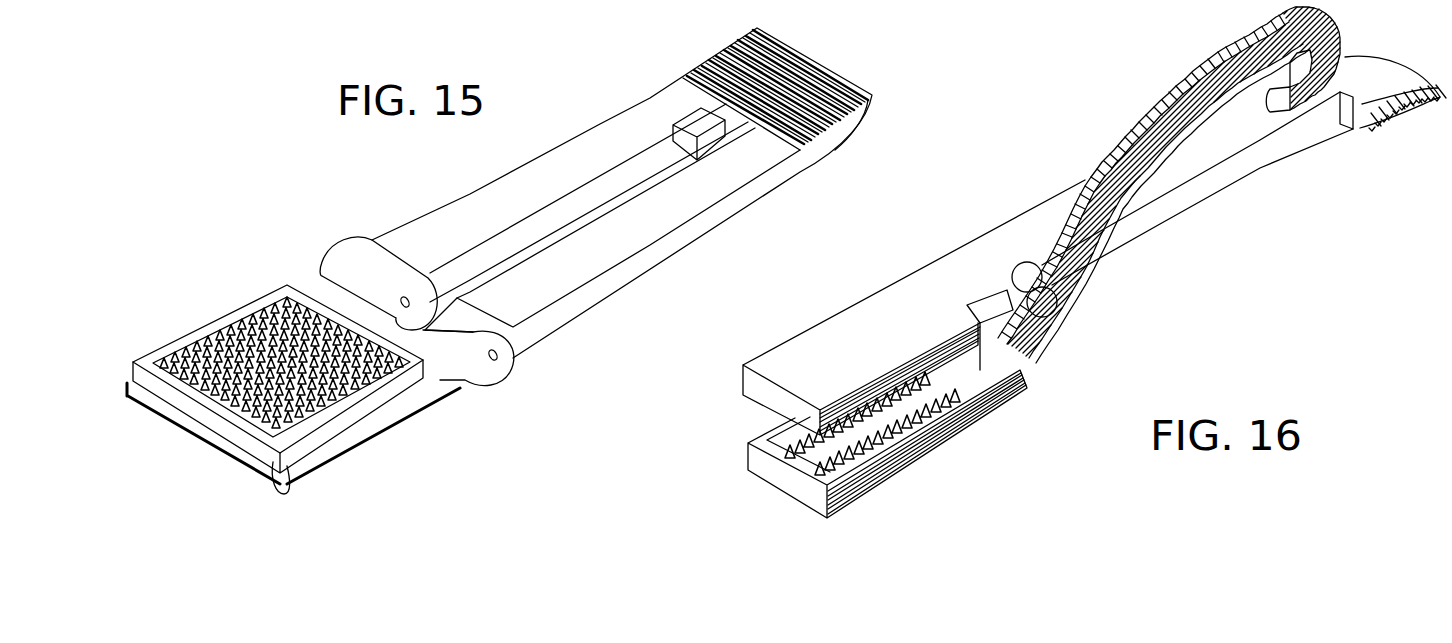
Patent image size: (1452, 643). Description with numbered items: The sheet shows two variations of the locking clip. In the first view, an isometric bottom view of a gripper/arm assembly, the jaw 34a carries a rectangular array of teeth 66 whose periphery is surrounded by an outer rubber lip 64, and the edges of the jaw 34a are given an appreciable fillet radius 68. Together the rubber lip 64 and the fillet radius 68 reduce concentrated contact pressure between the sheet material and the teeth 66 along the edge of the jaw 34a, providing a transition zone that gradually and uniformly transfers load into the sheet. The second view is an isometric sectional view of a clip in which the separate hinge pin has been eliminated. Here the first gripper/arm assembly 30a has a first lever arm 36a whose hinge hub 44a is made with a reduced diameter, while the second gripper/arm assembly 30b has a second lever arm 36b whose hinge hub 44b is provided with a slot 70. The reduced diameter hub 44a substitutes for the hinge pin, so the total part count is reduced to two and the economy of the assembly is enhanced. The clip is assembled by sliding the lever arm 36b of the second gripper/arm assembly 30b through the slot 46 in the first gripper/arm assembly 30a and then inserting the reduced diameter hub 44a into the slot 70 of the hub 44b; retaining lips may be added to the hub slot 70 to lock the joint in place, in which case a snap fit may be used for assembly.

In FIG. 15, the teeth 66 is at (255, 337).
In FIG. 15, the fillet radius 68 is at (327, 447).
In FIG. 15, the outer rubber lip 64 is at (420, 334).
In FIG. 15, the jaw 34a is at (512, 362).
In FIG. 16, the first gripper/arm assembly 30a is at (821, 302).
In FIG. 16, the second gripper/arm assembly 30b is at (977, 437).
In FIG. 16, the hinge hub 44a is at (1042, 297).
In FIG. 16, the hinge hub 44b is at (1013, 277).
In FIG. 16, the slot 70 is at (1023, 345).
In FIG. 16, the first lever arm 36a is at (1195, 160).
In FIG. 16, the second lever arm 36b is at (1118, 150).
In FIG. 16, the slot 46 is at (1272, 145).